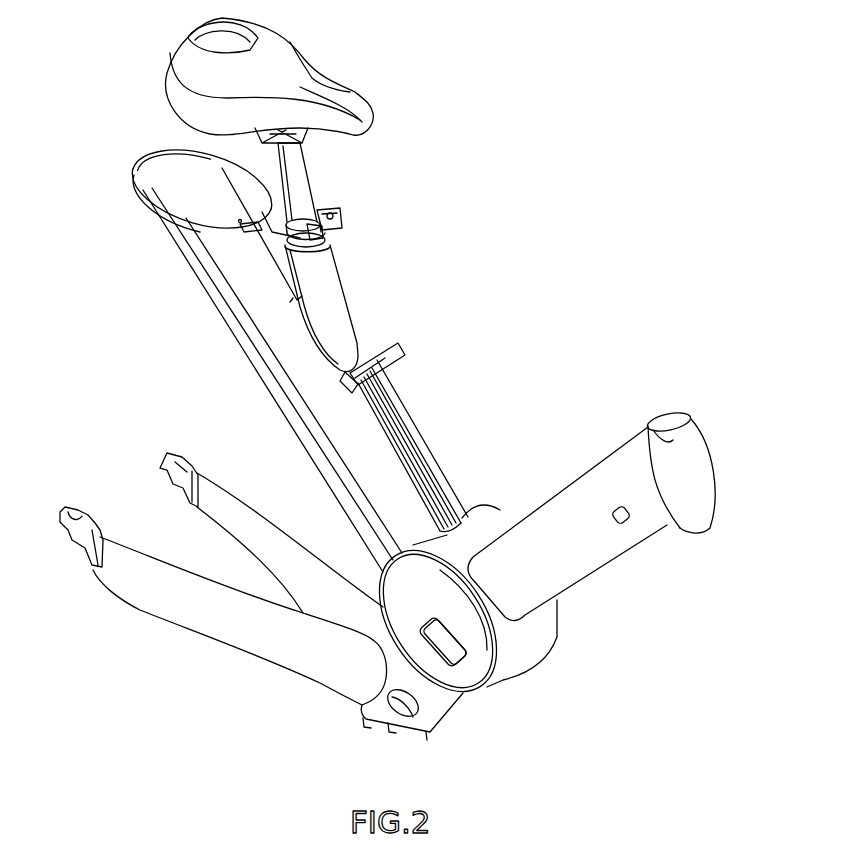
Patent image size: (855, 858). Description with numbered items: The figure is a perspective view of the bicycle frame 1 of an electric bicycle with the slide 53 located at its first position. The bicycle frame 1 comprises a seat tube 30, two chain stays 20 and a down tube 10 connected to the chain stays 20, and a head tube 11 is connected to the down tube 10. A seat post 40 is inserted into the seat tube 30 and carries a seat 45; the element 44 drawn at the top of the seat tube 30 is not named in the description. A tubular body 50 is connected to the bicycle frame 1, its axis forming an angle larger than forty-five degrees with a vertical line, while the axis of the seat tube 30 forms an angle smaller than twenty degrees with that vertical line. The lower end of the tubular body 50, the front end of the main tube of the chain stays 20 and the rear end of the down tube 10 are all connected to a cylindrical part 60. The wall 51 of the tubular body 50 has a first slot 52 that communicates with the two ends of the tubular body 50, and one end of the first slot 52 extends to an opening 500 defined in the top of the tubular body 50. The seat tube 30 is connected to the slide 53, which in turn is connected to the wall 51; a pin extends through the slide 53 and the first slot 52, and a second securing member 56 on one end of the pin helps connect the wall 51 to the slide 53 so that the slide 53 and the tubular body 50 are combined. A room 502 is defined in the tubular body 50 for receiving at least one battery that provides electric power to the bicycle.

The bicycle frame 1 is at (440, 464).
The down tube 10 is at (580, 567).
The head tube 11 is at (680, 523).
The chain stays 20 is at (223, 625).
The seat tube 30 is at (332, 288).
The seat post 40 is at (300, 183).
The seat post clamp 44 is at (340, 218).
The seat 45 is at (290, 82).
The tubular body 50 is at (268, 355).
The wall 51 is at (203, 257).
The first slot 52 is at (410, 445).
The slide 53 is at (283, 267).
The second securing member 56 is at (393, 365).
The cylindrical part 60 is at (480, 527).
The opening 500 is at (170, 192).
The room 502 is at (160, 157).